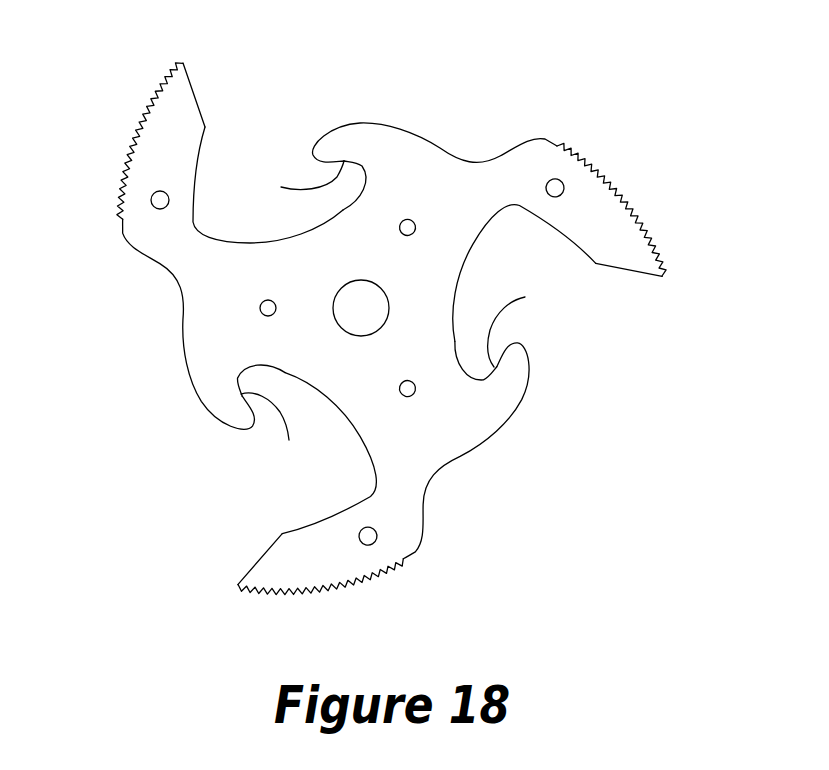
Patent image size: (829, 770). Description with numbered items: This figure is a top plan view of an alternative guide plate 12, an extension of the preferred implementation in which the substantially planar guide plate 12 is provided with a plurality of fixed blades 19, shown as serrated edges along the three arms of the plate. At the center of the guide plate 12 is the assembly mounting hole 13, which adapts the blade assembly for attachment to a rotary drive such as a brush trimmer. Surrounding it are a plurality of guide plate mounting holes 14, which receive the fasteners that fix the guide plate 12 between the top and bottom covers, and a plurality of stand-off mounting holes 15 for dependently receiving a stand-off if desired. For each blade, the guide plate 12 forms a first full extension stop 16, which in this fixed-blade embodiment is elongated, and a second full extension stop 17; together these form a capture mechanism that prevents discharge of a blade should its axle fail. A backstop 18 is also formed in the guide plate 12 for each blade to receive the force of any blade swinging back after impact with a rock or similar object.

The guide plate 12 is at (532, 25).
The assembly mounting hole 13 is at (350, 317).
The guide plate mounting hole 14 is at (151, 202).
The stand-off mounting hole 15 is at (260, 311).
The first full extension stop 16 is at (197, 91).
The second full extension stop 17 is at (395, 320).
The backstop 18 is at (392, 123).
The fixed blade 19 is at (163, 117).